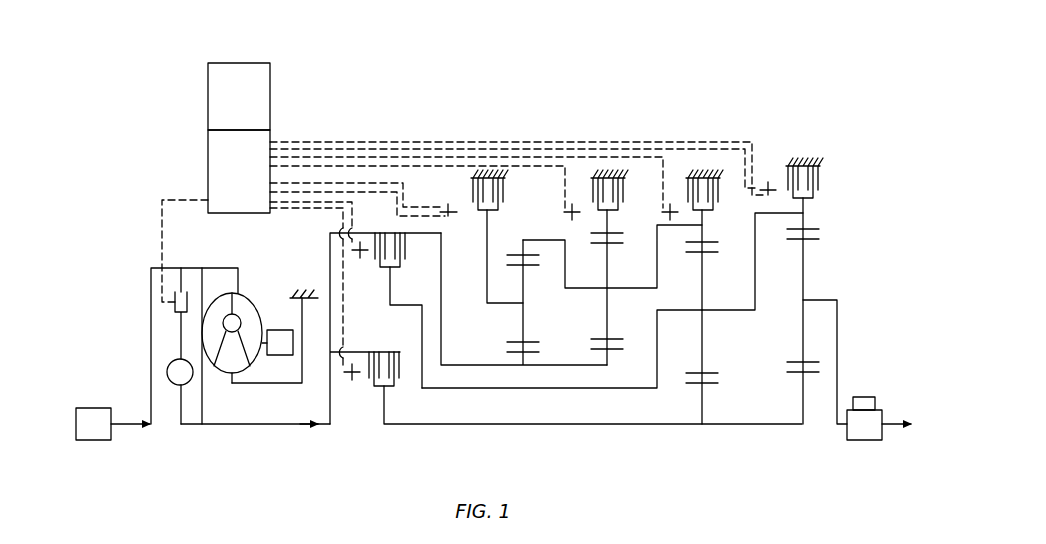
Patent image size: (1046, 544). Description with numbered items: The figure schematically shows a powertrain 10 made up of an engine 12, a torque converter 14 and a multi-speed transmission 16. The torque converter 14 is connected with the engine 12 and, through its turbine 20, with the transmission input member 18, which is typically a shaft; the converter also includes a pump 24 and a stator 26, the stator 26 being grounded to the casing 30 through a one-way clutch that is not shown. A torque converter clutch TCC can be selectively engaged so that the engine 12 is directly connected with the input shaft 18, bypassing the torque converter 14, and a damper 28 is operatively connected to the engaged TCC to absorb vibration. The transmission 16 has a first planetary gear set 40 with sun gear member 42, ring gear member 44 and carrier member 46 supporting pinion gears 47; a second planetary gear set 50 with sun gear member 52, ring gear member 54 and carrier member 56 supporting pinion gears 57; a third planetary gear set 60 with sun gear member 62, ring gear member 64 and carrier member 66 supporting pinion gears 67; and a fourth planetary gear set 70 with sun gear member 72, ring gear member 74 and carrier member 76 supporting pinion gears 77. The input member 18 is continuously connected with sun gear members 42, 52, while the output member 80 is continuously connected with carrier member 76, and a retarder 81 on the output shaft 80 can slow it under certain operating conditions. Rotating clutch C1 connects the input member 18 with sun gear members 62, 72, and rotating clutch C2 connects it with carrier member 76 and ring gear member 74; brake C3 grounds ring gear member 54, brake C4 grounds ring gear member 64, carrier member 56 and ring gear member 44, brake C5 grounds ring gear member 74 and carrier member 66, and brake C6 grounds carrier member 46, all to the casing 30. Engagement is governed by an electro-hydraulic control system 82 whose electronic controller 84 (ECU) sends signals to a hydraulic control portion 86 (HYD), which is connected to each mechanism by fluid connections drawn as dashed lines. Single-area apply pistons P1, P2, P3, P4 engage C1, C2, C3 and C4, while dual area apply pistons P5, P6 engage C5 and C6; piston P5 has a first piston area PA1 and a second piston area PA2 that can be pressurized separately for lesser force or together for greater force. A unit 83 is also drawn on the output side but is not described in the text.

The powertrain 10 is at (603, 60).
The engine 12 is at (85, 440).
The torque converter 14 is at (266, 268).
The multi-speed transmission 16 is at (681, 100).
The transmission input member 18 is at (278, 424).
The turbine 20 is at (220, 300).
The pump 24 is at (262, 331).
The stator 26 is at (228, 378).
The damper 28 is at (177, 387).
The casing 30 is at (302, 290).
The first planetary gear set 40 is at (571, 336).
The sun gear member 42 is at (521, 356).
The ring gear member 44 is at (515, 245).
The carrier member 46 is at (502, 306).
The pinion gears 47 is at (524, 278).
The second planetary gear set 50 is at (606, 315).
The sun gear member 52 is at (614, 350).
The ring gear member 54 is at (623, 240).
The carrier member 56 is at (616, 289).
The pinion gears 57 is at (606, 305).
The third planetary gear set 60 is at (584, 340).
The sun gear member 62 is at (713, 386).
The ring gear member 64 is at (719, 250).
The carrier member 66 is at (668, 312).
The pinion gears 67 is at (703, 340).
The fourth planetary gear set 70 is at (786, 330).
The sun gear member 72 is at (786, 372).
The ring gear member 74 is at (819, 238).
The carrier member 76 is at (837, 300).
The pinion gears 77 is at (803, 285).
The output member 80 is at (893, 424).
The retarder 81 is at (862, 440).
The electro-hydraulic control system 82 is at (185, 140).
The sensor 83 is at (866, 397).
The electronic controller 84 is at (265, 63).
The hydraulic control portion 86 is at (208, 175).
The rotating clutch C1 is at (377, 392).
The rotating clutch C2 is at (399, 270).
The stationary clutch or brake C3 is at (621, 220).
The stationary clutch or brake C4 is at (716, 222).
The stationary clutch or brake C5 is at (819, 197).
The stationary clutch or brake C6 is at (502, 218).
The single-area apply piston P1 is at (363, 260).
The single-area apply piston P2 is at (350, 384).
The single-area apply piston P3 is at (573, 223).
The single-area apply piston P4 is at (669, 223).
The dual area apply piston P5 is at (779, 186).
The dual area apply piston P6 is at (453, 222).
The first piston area PA1 is at (762, 216).
The second piston area PA2 is at (763, 182).
The torque converter clutch TCC is at (183, 284).